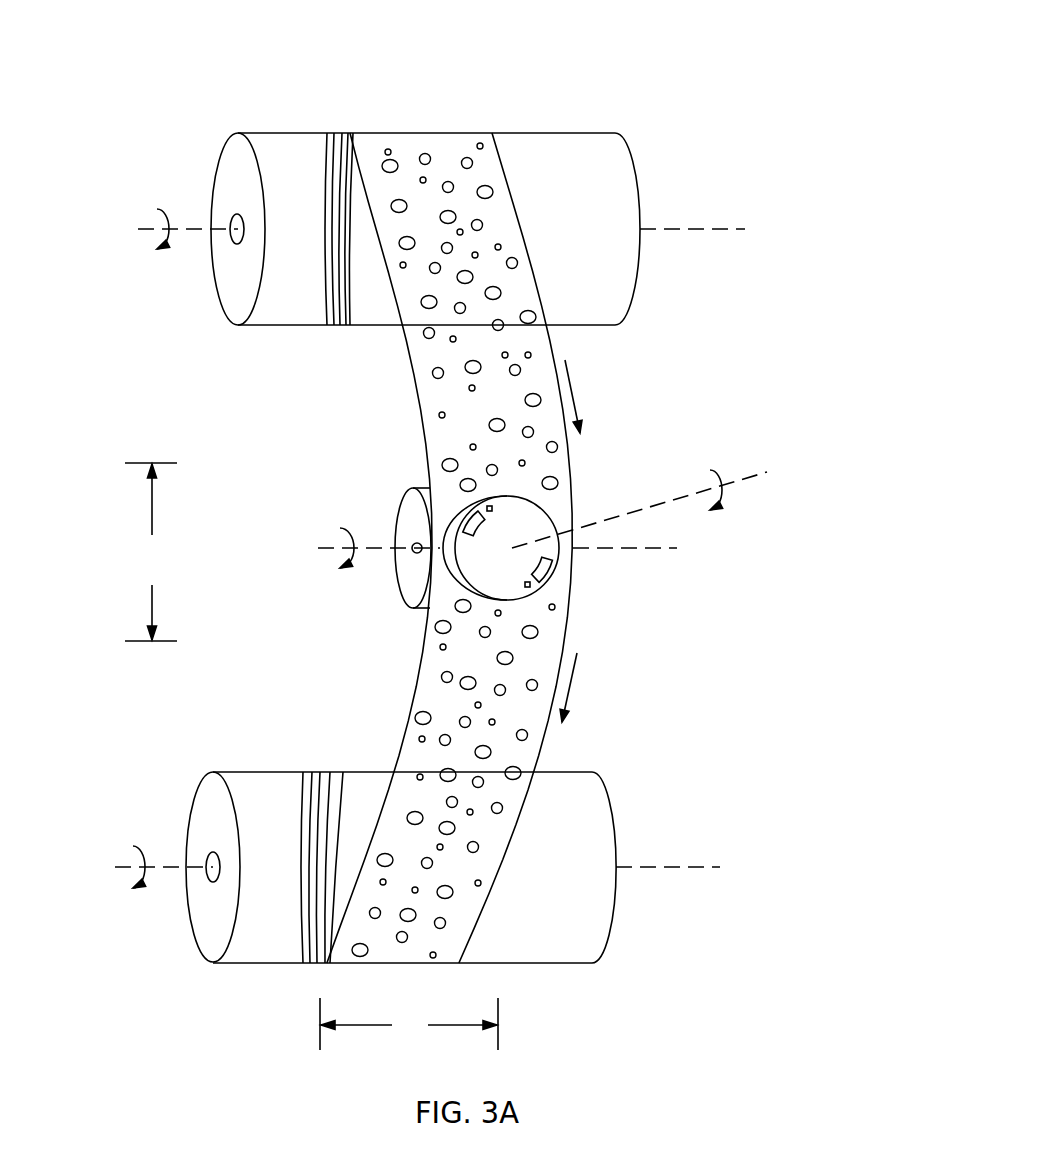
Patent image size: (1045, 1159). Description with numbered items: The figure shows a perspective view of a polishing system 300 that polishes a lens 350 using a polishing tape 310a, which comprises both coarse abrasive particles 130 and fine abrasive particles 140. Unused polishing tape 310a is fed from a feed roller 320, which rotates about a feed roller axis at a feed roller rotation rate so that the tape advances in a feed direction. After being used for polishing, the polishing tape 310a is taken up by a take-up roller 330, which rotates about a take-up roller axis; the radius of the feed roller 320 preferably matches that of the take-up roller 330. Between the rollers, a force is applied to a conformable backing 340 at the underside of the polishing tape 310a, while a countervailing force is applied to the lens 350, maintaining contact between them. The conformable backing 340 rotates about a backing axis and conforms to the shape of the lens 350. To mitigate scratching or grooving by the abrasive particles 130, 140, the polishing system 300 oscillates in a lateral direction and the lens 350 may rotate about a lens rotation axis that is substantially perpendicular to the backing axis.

The polishing system 300 is at (838, 58).
The polishing tape 310a is at (425, 133).
The feed roller 320 is at (635, 165).
The take-up roller 330 is at (610, 930).
The conformable backing 340 is at (403, 592).
The lens 350 is at (555, 572).
The coarse abrasive particles 130 is at (430, 374).
The fine abrasive particles 140 is at (438, 416).